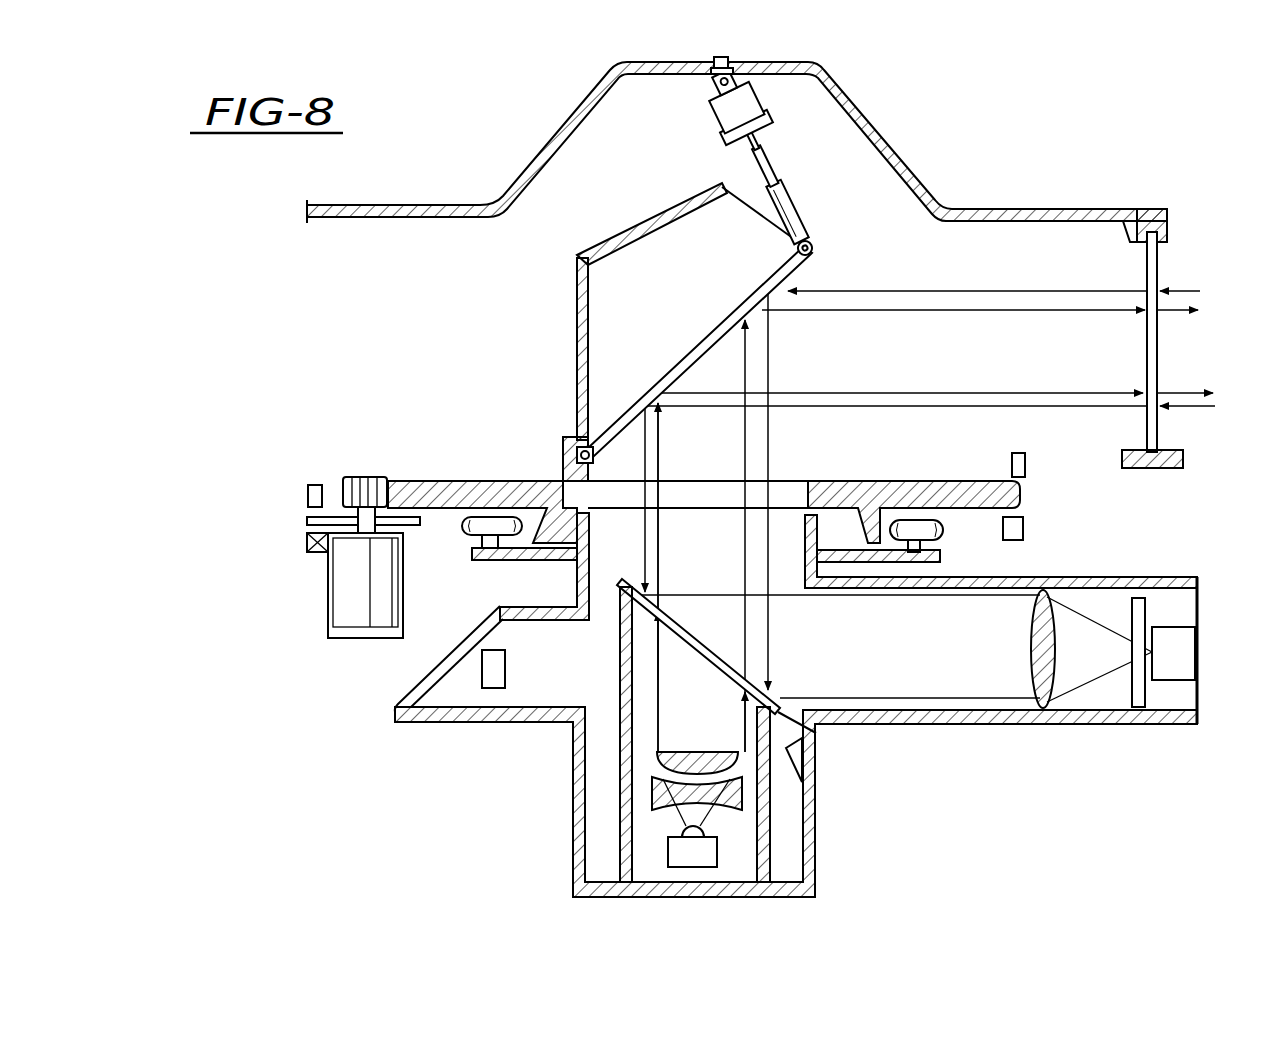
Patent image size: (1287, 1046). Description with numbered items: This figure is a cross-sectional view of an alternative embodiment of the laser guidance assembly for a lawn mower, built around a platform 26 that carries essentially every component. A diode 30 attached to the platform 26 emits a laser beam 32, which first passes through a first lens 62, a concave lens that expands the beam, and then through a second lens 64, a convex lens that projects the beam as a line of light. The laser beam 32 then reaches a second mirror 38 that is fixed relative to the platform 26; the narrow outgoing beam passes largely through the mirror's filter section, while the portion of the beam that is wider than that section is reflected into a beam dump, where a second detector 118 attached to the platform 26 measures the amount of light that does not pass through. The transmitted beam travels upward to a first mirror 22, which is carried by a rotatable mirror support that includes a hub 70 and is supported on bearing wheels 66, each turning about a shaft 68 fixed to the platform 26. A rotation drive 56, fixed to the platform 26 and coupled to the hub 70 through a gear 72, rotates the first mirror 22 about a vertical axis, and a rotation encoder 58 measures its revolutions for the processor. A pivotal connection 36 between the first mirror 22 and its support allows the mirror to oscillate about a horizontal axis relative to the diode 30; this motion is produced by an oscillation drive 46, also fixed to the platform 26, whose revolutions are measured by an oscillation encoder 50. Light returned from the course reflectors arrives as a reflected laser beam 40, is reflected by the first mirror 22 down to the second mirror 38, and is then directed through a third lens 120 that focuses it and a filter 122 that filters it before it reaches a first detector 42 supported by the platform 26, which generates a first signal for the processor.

The first mirror 22 is at (667, 376).
The platform 26 is at (1105, 211).
The diode 30 is at (703, 858).
The laser beam 32 is at (1180, 395).
The pivotal connection 36 is at (566, 441).
The second mirror 38 is at (817, 745).
The reflected laser beam 40 is at (1118, 292).
The first detector 42 is at (1185, 670).
The oscillation drive 46 is at (773, 103).
The oscillation encoder 50 is at (1023, 528).
The rotation drive 56 is at (335, 585).
The rotation encoder 58 is at (306, 541).
The first lens 62 is at (658, 800).
The second lens 64 is at (672, 757).
The bearing wheels 66 is at (477, 521).
The shaft 68 is at (915, 552).
The hub 70 is at (417, 481).
The gear 72 is at (347, 482).
The second detector 118 is at (490, 686).
The third lens 120 is at (1048, 622).
The filter 122 is at (1140, 615).